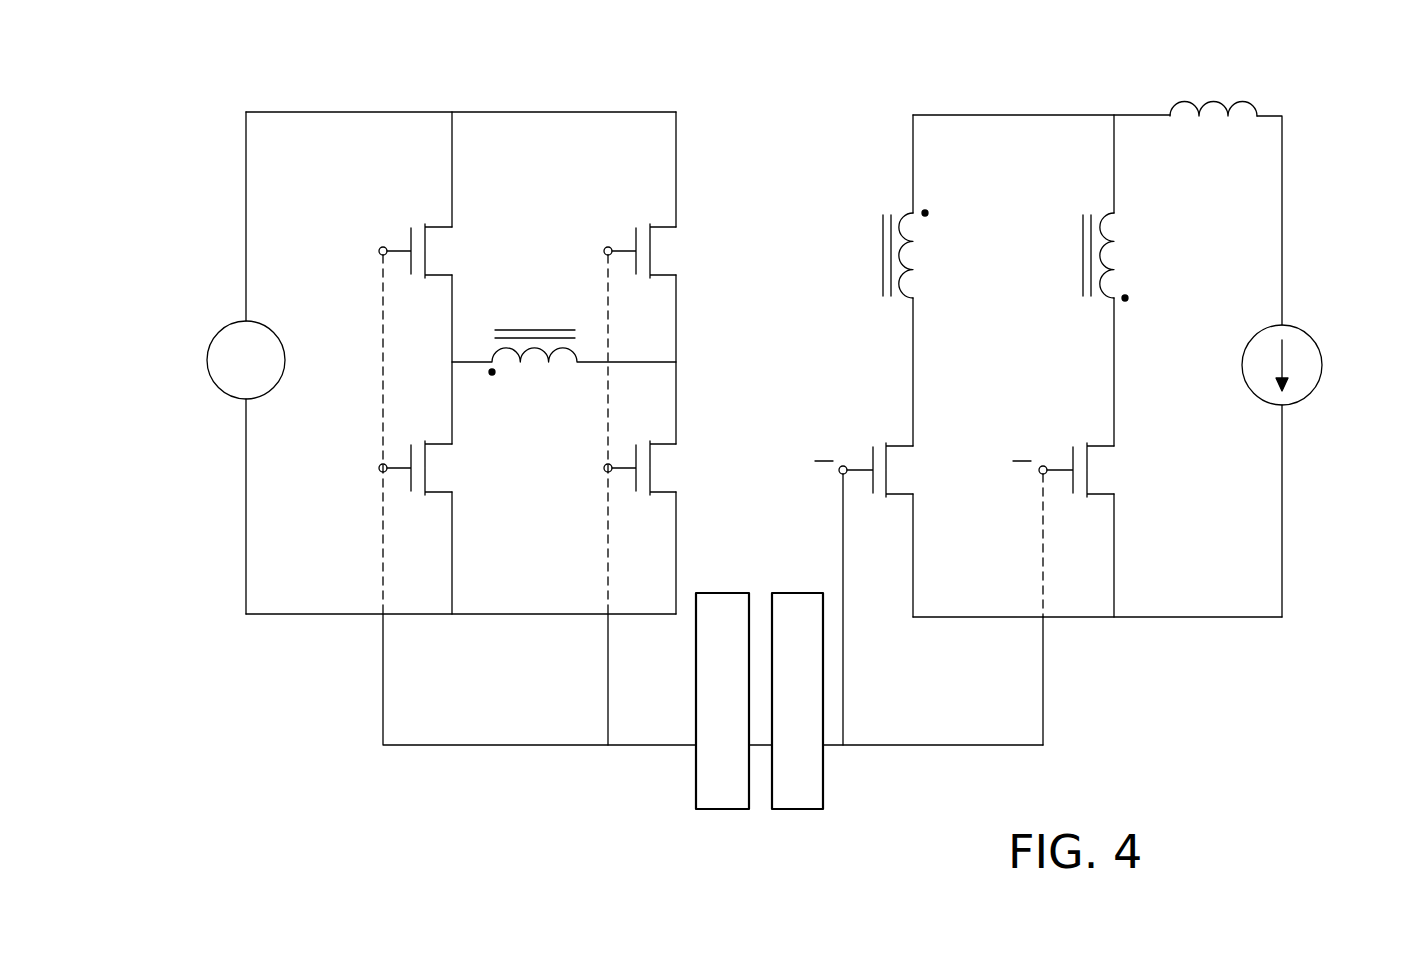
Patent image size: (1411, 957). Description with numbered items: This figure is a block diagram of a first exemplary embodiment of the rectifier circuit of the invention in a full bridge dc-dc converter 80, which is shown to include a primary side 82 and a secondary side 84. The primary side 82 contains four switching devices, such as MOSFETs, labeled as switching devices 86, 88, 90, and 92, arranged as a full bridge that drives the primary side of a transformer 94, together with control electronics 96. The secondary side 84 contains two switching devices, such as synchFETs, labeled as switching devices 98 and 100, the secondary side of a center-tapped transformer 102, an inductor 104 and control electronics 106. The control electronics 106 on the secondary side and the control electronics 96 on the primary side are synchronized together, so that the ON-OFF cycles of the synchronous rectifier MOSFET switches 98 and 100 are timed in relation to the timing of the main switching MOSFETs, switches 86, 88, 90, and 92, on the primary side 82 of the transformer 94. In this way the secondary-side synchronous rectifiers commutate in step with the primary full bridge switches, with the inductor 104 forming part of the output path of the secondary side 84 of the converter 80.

The full bridge dc-dc converter 80 is at (1048, 24).
The primary side 82 is at (678, 88).
The secondary side 84 is at (914, 89).
The switching device 86 is at (440, 234).
The switching device 88 is at (664, 234).
The switching device 90 is at (440, 447).
The switching device 92 is at (664, 447).
The transformer 94 is at (526, 330).
The control electronics 96 is at (715, 592).
The switching device 98 is at (901, 449).
The switching device 100 is at (1102, 449).
The center-tapped transformer 102 is at (882, 258).
The inductor 104 is at (1196, 118).
The control electronics 106 is at (791, 592).